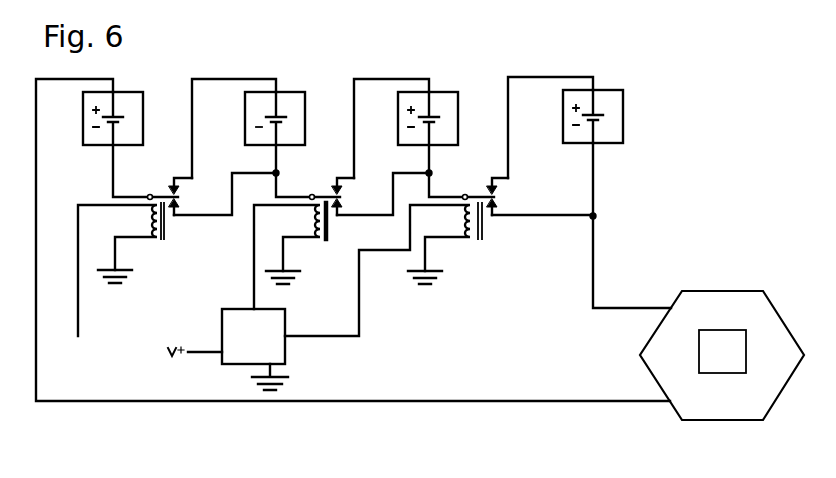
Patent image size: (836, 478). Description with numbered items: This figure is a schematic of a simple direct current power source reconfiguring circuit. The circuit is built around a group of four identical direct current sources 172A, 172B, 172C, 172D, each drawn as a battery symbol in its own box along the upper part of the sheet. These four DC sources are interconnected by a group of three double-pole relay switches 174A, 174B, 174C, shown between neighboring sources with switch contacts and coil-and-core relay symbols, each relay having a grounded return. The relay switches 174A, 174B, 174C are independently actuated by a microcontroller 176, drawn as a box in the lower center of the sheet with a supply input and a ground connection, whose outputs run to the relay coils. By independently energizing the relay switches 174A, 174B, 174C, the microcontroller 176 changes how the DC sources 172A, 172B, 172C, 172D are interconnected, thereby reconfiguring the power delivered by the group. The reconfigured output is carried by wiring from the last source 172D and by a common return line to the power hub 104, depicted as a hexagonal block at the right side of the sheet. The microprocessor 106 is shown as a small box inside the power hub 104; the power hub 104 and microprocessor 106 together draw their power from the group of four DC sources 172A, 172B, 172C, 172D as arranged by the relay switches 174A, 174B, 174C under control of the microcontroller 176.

The direct current source 172A is at (102, 140).
The direct current source 172B is at (260, 100).
The direct current source 172C is at (400, 137).
The direct current source 172D is at (575, 141).
The double-pole relay switch 174A is at (140, 238).
The double-pole relay switch 174B is at (303, 238).
The double-pole relay switch 174C is at (446, 238).
The microcontroller 176 is at (284, 350).
The power hub 104 is at (708, 298).
The microprocessor 106 is at (707, 362).